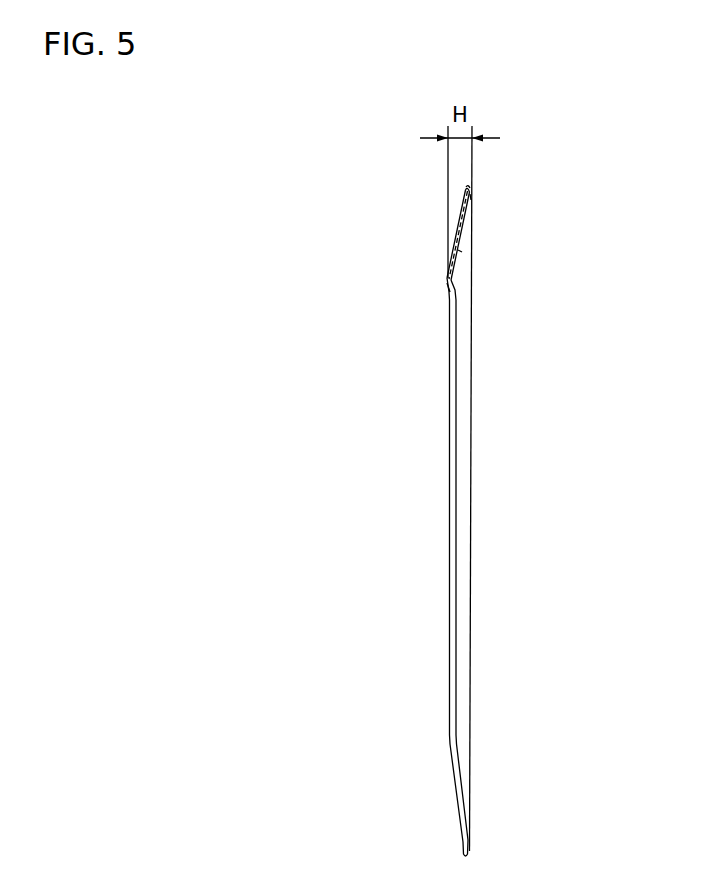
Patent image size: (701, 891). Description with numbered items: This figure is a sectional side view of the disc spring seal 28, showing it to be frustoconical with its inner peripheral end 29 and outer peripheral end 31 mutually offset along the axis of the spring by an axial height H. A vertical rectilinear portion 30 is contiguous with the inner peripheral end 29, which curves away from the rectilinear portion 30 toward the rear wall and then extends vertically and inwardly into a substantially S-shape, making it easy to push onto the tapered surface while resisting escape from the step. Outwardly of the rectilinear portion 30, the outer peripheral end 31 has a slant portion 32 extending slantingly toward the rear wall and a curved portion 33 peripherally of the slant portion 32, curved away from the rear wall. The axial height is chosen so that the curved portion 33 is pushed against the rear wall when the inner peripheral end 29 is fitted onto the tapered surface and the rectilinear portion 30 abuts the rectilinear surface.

The disc spring seal 28 is at (444, 237).
The inner peripheral end 29 is at (457, 319).
The rectilinear portion 30 is at (447, 288).
The outer peripheral end 31 is at (465, 190).
The slant portion 32 is at (460, 253).
The curved portion 33 is at (470, 198).